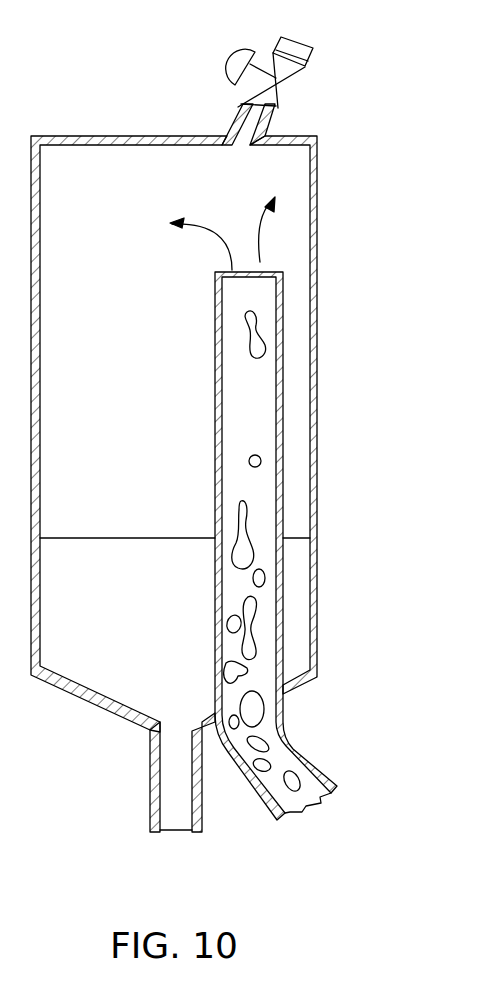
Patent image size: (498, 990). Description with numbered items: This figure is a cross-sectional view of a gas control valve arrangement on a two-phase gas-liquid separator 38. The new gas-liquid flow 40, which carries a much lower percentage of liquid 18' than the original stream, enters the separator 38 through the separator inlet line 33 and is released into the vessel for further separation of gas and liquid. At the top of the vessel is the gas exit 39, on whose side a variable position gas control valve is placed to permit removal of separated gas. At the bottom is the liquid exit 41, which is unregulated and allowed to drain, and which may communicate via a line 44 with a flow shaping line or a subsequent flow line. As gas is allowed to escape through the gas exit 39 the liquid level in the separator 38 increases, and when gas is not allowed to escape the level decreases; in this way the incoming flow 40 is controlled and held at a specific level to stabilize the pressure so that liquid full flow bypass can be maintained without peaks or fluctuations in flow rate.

The gas-liquid separator 38 is at (322, 257).
The gas exit 39 is at (232, 121).
The new gas-liquid flow 40 is at (258, 615).
The separator inlet line 33 is at (288, 731).
The liquid exit 41 is at (170, 728).
The line 44 is at (152, 781).
The liquid 18' is at (121, 814).